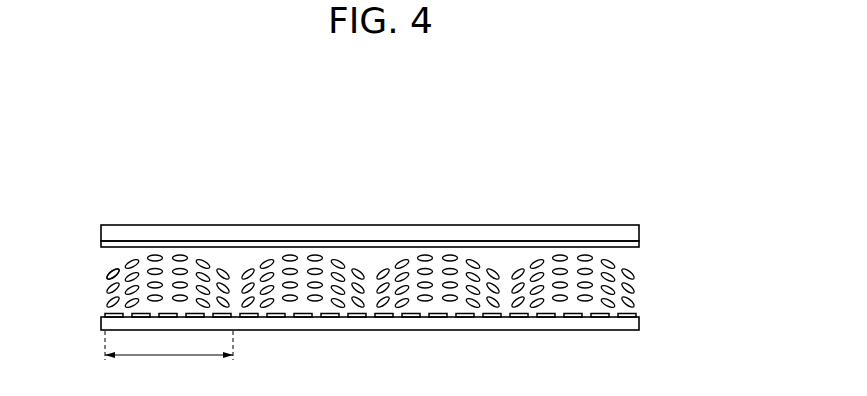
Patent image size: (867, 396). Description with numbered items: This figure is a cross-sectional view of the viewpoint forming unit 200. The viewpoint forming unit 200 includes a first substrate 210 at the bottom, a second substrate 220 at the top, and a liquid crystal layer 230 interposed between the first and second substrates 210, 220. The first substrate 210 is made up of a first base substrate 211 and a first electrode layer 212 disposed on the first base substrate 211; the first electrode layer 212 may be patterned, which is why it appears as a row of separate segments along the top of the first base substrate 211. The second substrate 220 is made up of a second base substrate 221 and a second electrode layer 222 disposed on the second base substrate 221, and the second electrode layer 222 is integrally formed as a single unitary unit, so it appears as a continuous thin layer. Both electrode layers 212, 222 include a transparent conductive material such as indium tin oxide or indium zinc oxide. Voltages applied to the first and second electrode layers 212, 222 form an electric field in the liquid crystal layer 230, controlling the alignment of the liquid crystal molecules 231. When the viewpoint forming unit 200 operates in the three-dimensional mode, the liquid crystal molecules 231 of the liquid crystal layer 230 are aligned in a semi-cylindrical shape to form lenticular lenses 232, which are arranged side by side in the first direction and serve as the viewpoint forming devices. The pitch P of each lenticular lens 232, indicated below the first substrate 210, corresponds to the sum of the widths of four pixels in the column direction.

The viewpoint forming unit 200 is at (655, 173).
The first substrate 210 is at (427, 330).
The first base substrate 211 is at (630, 325).
The first electrode layer 212 is at (632, 315).
The second substrate 220 is at (427, 247).
The second base substrate 221 is at (630, 233).
The second electrode layer 222 is at (630, 243).
The liquid crystal layer 230 is at (395, 278).
The liquid crystal molecules 231 is at (108, 275).
The lenticular lenses 232 is at (121, 260).